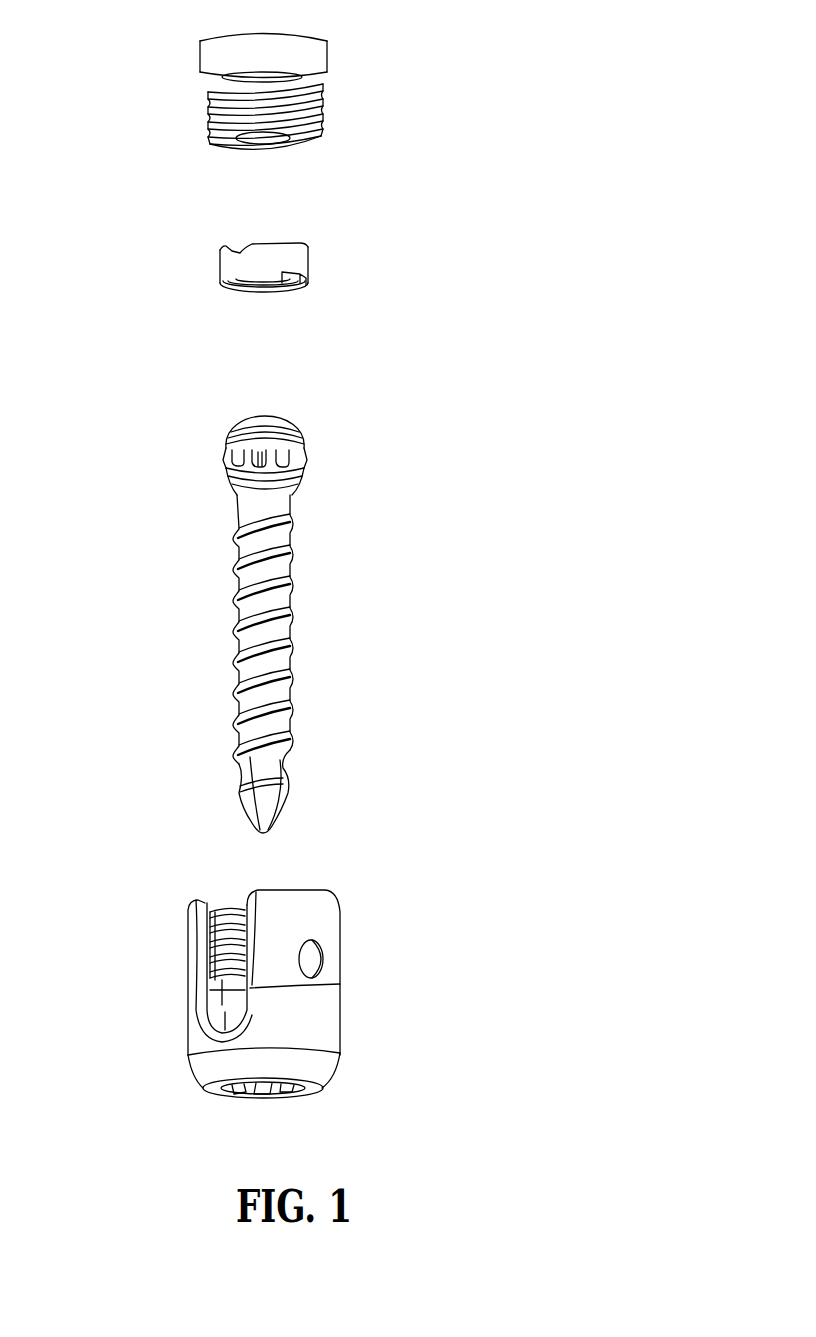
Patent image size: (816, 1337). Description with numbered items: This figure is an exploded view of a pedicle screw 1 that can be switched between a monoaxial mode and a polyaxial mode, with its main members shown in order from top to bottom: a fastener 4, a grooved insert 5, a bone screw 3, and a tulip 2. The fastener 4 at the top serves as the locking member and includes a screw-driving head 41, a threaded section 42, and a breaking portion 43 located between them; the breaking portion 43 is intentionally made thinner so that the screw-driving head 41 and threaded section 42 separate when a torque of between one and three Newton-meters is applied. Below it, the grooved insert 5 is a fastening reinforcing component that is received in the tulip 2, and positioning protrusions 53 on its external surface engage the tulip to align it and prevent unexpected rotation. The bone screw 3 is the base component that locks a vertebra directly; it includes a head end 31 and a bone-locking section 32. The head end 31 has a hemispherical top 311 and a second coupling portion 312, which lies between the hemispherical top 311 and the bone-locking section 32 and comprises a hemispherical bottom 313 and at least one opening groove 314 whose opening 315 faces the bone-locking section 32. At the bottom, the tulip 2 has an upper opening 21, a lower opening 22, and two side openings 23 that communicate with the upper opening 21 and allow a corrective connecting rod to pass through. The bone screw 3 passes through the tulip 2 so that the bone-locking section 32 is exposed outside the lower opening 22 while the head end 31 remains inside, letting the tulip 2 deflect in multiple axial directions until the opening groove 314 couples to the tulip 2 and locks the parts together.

The pedicle screw 1 is at (525, 42).
The tulip 2 is at (257, 990).
The upper opening 21 is at (233, 907).
The lower opening 22 is at (279, 1110).
The side openings 23 is at (234, 1000).
The bone screw 3 is at (238, 596).
The head end 31 is at (223, 438).
The hemispherical top 311 is at (288, 424).
The second coupling portion 312 is at (175, 462).
The hemispherical bottom 313 is at (228, 452).
The opening groove 314 is at (233, 456).
The opening 315 is at (265, 465).
The bone-locking section 32 is at (240, 643).
The fastener 4 is at (324, 88).
The screw-driving head 41 is at (318, 60).
The threaded section 42 is at (307, 116).
The breaking portion 43 is at (296, 73).
The grooved insert 5 is at (318, 262).
The positioning protrusions 53 is at (300, 278).